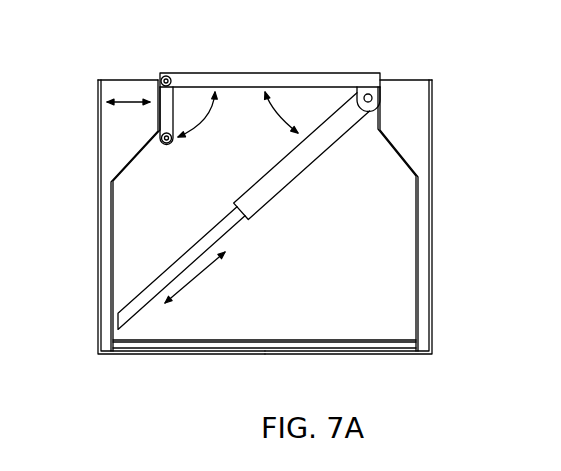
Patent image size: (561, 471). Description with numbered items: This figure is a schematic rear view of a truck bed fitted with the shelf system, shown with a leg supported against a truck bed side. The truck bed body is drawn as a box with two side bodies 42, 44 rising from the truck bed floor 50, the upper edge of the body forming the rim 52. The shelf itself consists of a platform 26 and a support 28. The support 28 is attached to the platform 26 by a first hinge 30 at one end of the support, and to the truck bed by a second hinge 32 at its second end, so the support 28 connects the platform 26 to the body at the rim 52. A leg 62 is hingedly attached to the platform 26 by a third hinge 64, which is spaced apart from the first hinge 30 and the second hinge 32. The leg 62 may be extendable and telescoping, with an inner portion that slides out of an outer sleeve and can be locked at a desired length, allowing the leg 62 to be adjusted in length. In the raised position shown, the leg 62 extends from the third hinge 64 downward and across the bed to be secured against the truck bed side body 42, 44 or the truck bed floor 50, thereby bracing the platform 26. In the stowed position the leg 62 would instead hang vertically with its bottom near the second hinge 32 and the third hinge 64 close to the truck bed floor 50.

The platform 26 is at (281, 72).
The support 28 is at (170, 118).
The first hinge 30 is at (166, 74).
The second hinge 32 is at (168, 146).
The box side 42 is at (98, 258).
The box side 44 is at (432, 254).
The truck bed floor 50 is at (363, 343).
The rim 52 is at (98, 90).
The leg 62 is at (312, 162).
The third hinge 64 is at (368, 93).